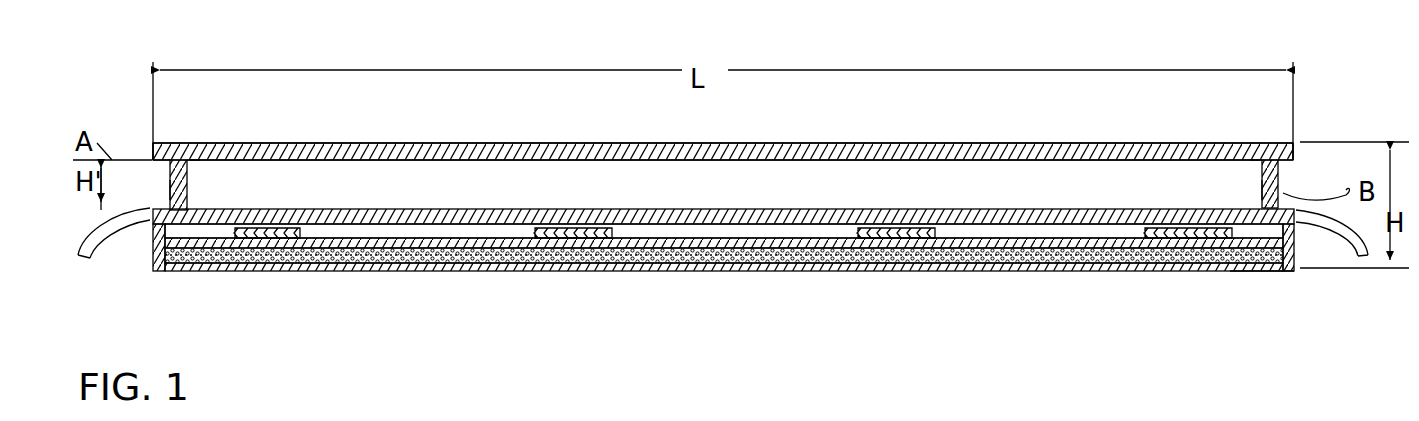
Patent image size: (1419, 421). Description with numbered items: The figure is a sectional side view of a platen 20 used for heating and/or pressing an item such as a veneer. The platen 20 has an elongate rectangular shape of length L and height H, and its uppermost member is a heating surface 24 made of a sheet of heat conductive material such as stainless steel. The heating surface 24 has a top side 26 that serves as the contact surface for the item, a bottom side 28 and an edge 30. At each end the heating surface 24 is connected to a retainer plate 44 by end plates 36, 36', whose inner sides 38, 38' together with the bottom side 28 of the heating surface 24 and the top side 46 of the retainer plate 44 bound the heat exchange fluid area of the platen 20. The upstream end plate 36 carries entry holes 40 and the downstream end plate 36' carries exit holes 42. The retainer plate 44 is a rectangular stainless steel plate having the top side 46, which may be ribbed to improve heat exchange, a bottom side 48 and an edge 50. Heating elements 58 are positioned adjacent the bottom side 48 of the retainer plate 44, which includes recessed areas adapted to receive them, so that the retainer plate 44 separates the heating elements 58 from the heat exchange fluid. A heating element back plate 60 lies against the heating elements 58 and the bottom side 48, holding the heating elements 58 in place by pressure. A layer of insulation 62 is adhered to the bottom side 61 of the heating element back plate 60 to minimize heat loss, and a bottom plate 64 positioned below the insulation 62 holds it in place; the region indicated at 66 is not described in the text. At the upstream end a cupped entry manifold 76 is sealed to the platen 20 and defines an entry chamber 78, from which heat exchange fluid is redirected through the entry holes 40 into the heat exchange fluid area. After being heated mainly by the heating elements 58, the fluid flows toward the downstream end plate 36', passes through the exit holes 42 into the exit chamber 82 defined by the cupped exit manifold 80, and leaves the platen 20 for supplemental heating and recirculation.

The platen 20 is at (448, 135).
The heating surface 24 is at (748, 142).
The top side of heating surface 26 is at (928, 143).
The bottom side of heating surface 28 is at (1068, 160).
The edge of heating surface 30 is at (1300, 148).
The end plate 36 is at (201, 152).
The end plate 36' is at (1317, 177).
The inner side of end plate 38 is at (233, 131).
The inner side of end plate 38' is at (1231, 131).
The entry holes 40 is at (150, 162).
The exit holes 42 is at (1262, 186).
The retainer plate 44 is at (152, 215).
The top side of retainer plate 46 is at (147, 232).
The bottom side of retainer plate 48 is at (212, 271).
The edge of retainer plate 50 is at (1300, 200).
The heating elements 58 is at (268, 271).
The heating element back plate 60 is at (1260, 271).
The bottom side of heating element back plate 61 is at (1022, 271).
The layer of insulation 62 is at (1110, 271).
The bottom plate 64 is at (330, 271).
The intermediate layer surface 66 is at (393, 271).
The entry manifold 76 is at (157, 213).
The entry chamber 78 is at (140, 196).
The exit manifold 80 is at (1296, 160).
The exit chamber 82 is at (1315, 232).